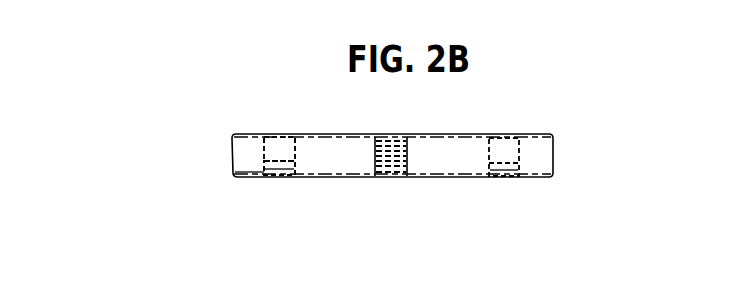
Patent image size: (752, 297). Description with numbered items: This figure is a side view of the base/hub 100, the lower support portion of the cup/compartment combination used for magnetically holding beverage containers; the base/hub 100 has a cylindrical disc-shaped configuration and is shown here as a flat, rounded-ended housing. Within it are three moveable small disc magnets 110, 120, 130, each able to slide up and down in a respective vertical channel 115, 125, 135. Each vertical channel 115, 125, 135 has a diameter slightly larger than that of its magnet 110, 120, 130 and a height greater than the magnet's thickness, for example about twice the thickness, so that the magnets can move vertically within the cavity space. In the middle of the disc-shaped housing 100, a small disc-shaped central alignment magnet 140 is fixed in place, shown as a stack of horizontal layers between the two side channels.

The base/hub 100 is at (230, 148).
The magnet 110 is at (510, 172).
The vertical channel 115 is at (520, 147).
The magnet 120 is at (281, 171).
The vertical channel 125 is at (273, 152).
The magnet 130 is at (279, 168).
The vertical channel 135 is at (279, 149).
The central alignment magnet 140 is at (400, 140).